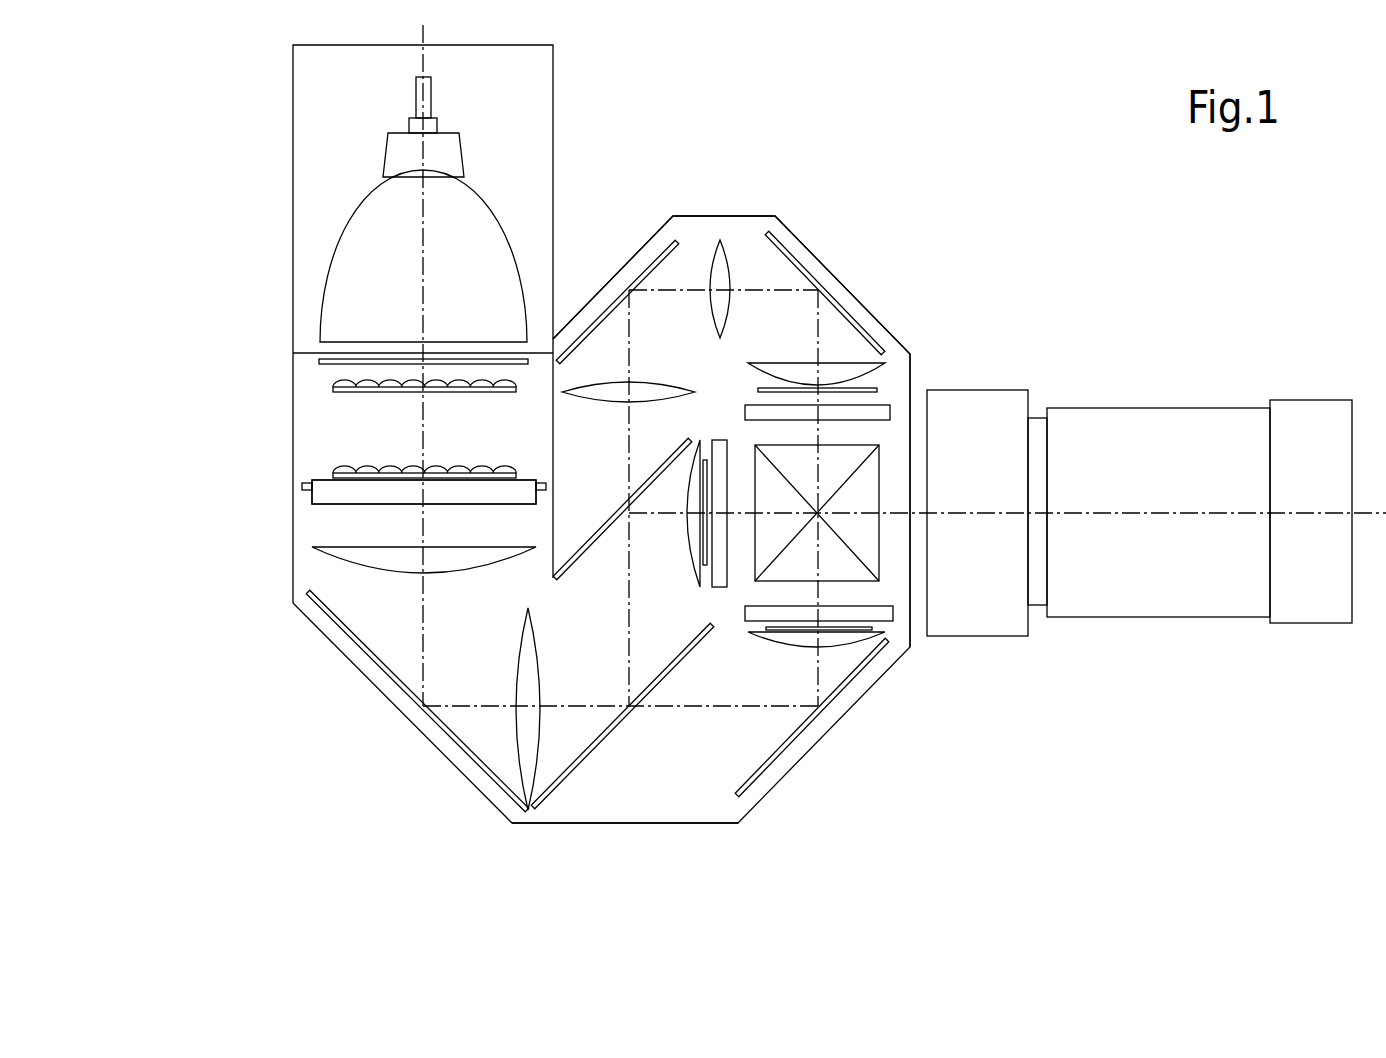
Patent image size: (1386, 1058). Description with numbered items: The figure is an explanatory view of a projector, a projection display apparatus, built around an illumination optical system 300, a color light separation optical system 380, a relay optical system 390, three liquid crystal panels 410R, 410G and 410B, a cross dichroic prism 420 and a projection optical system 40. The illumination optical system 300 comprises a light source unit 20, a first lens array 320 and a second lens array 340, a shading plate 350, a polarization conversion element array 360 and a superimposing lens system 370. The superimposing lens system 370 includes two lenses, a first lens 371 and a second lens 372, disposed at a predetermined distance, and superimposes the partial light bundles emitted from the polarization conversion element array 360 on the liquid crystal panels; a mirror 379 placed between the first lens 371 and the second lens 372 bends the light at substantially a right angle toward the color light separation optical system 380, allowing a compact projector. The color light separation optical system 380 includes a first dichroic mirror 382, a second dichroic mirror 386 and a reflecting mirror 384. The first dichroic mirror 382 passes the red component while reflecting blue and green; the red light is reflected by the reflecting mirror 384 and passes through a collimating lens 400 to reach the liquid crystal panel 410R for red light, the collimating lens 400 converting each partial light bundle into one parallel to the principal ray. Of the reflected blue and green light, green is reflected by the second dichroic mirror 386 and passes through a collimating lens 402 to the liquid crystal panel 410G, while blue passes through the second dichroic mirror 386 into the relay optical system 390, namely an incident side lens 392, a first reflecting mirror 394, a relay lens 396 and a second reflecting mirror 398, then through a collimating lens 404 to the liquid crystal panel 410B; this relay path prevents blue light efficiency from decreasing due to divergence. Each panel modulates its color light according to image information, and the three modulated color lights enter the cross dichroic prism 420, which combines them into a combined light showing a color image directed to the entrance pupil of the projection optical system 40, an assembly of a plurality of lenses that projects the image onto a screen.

The illumination optical system 300 is at (212, 167).
The light source unit 20 is at (283, 235).
The first lens array 320 is at (333, 391).
The second lens array 340 is at (335, 472).
The shading plate 350 is at (302, 490).
The polarization conversion element array 360 is at (424, 492).
The superimposing lens system 370 is at (387, 836).
The first lens 371 is at (343, 552).
The mirror 379 is at (366, 644).
The second lens 372 is at (517, 748).
The color light separation optical system 380 is at (590, 808).
The first dichroic mirror 382 is at (612, 731).
The reflecting mirror 384 is at (750, 775).
The second dichroic mirror 386 is at (585, 553).
The relay optical system 390 is at (703, 235).
The incident side lens 392 is at (587, 403).
The first reflecting mirror 394 is at (608, 312).
The relay lens 396 is at (728, 307).
The second reflecting mirror 398 is at (808, 268).
The collimating lens 404 is at (785, 362).
The collimating lens 402 is at (687, 542).
The collimating lens 400 is at (848, 643).
The liquid crystal panel for blue light 410B is at (893, 408).
The liquid crystal panel for green light 410G is at (714, 440).
The liquid crystal panel for red light 410R is at (745, 613).
The cross dichroic prism 420 is at (882, 557).
The projection optical system 40 is at (1137, 392).